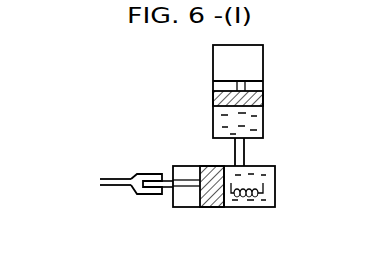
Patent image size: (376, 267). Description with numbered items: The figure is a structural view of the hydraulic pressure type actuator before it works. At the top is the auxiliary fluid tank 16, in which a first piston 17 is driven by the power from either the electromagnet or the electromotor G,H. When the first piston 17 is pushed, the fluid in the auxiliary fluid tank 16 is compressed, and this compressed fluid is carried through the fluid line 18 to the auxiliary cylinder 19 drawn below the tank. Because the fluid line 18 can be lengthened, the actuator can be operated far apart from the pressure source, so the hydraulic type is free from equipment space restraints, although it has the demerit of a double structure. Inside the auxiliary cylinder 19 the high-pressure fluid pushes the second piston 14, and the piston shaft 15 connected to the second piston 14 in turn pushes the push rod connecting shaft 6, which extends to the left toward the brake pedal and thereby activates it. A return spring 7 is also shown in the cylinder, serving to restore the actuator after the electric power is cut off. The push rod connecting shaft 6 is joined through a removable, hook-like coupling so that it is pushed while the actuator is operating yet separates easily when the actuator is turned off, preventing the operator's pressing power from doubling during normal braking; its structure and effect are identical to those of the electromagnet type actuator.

The electromotor and electromagnet G,H is at (266, 57).
The first piston 17 is at (213, 97).
The auxiliary fluid tank 16 is at (257, 120).
The fluid line 18 is at (244, 151).
The piston shaft 15 is at (172, 168).
The second piston 14 is at (207, 210).
The auxiliary cylinder 19 is at (277, 192).
The return spring 7 is at (252, 210).
The push rod connecting shaft 6 is at (116, 187).